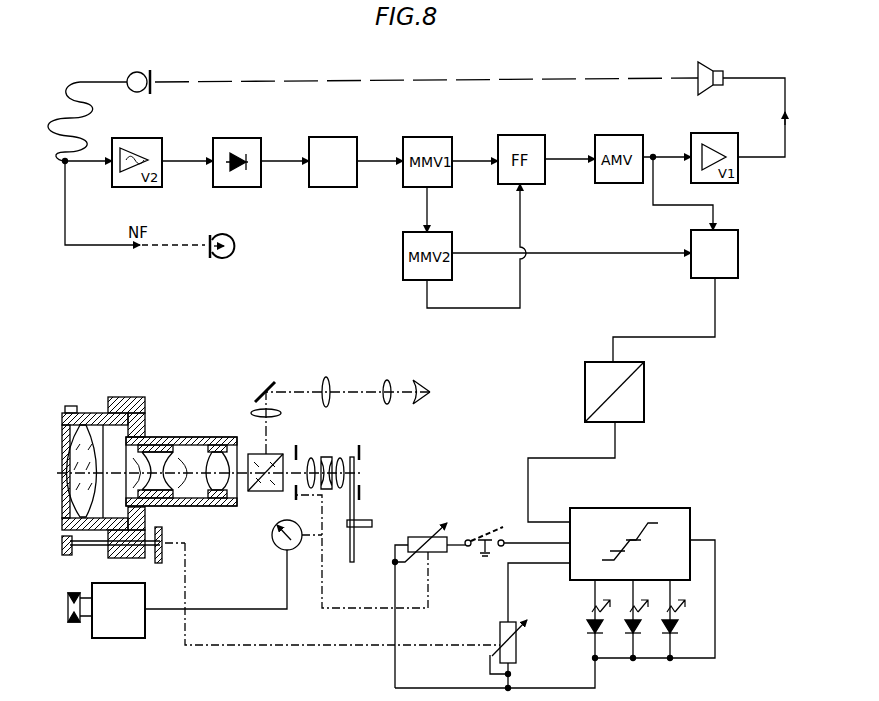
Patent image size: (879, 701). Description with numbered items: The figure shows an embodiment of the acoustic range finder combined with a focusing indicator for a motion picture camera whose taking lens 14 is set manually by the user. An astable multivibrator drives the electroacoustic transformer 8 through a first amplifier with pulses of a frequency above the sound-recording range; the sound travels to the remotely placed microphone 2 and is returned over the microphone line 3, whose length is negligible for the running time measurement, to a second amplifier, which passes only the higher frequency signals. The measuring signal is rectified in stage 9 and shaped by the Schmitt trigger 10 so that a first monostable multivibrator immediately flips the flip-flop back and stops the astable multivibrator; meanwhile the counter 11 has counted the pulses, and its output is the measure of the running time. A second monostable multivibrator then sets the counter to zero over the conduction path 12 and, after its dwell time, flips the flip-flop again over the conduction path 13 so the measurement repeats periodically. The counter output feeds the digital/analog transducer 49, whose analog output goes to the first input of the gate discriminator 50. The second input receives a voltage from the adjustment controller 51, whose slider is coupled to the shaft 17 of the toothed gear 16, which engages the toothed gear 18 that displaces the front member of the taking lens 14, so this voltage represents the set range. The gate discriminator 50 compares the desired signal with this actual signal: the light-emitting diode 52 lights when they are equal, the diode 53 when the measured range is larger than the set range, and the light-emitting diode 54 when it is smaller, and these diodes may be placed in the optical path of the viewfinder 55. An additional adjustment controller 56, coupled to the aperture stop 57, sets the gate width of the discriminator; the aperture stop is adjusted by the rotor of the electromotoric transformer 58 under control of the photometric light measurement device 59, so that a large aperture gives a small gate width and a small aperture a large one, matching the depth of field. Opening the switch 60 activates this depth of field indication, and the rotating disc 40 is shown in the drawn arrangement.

The microphone 2 is at (131, 72).
The microphone line 3 is at (55, 110).
The electroacoustic transformer 8 is at (720, 72).
The rectifier stage 9 is at (236, 138).
The Schmitt trigger 10 is at (332, 150).
The counter 11 is at (727, 254).
The conduction path 12 is at (566, 253).
The conduction path 13 is at (517, 237).
The camera taking lens 14 is at (158, 421).
The toothed gear 16 is at (62, 550).
The shaft 17 is at (90, 546).
The toothed gear 18 is at (65, 407).
The rotating disc 40 is at (356, 508).
The digital/analog transducer 49 is at (644, 389).
The gate discriminator 50 is at (666, 516).
The adjustment controller 51 is at (516, 645).
The light-emitting diode 52 is at (635, 633).
The light-emitting diode 53 is at (597, 633).
The light-emitting diode 54 is at (672, 633).
The viewfinder 55 is at (352, 392).
The adjustment controller 56 is at (420, 537).
The aperture stop 57 is at (297, 453).
The electromotoric transformer 58 is at (273, 543).
The photometric light measurement device 59 is at (121, 632).
The switch 60 is at (478, 537).